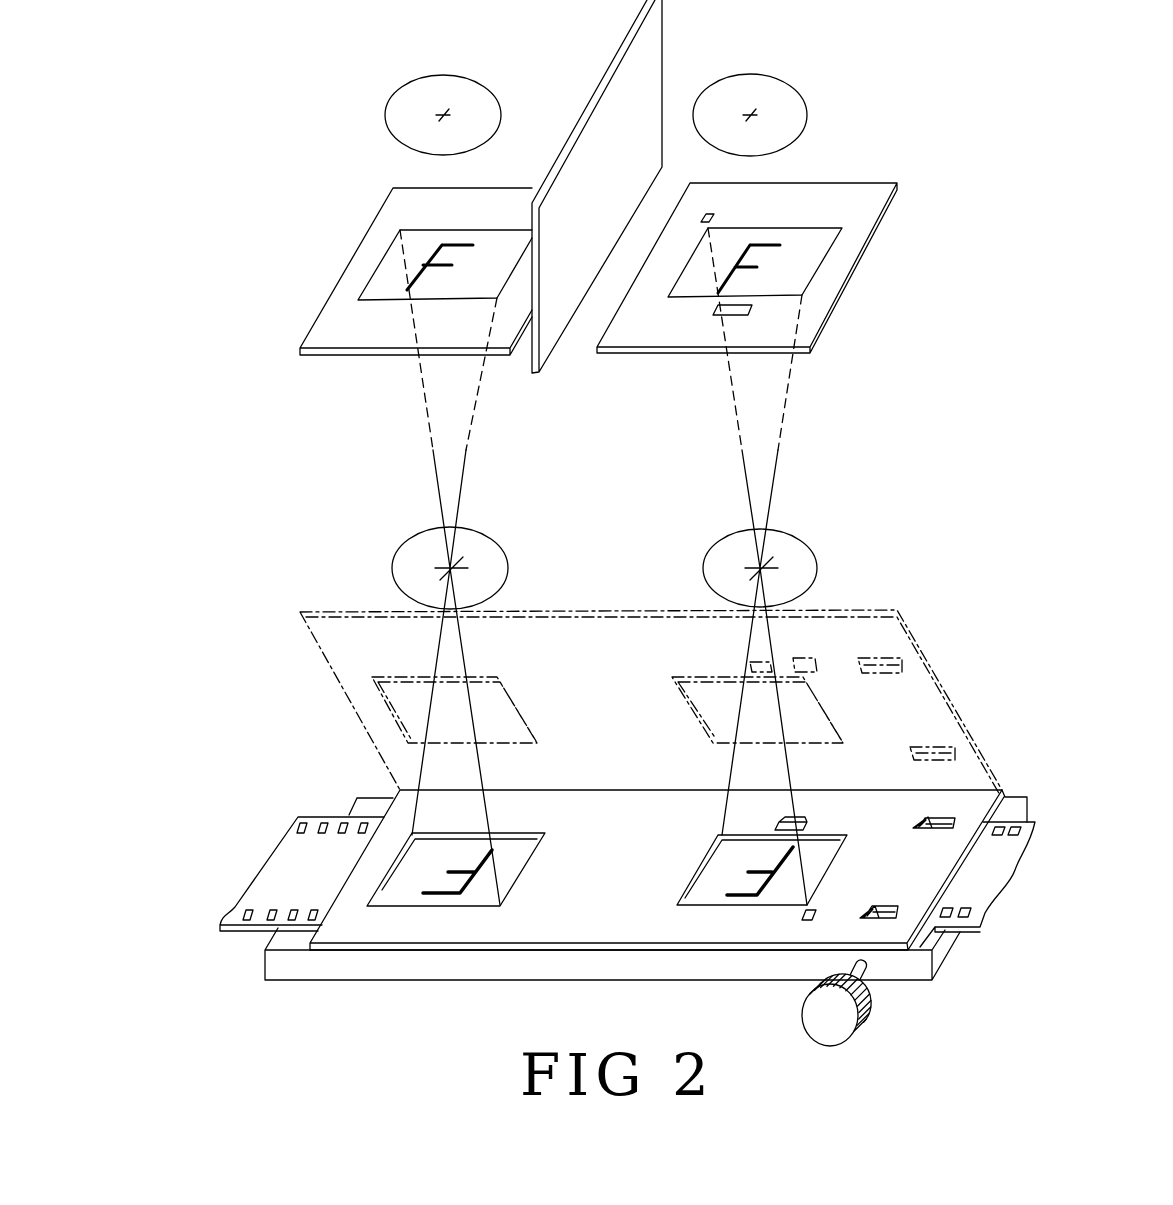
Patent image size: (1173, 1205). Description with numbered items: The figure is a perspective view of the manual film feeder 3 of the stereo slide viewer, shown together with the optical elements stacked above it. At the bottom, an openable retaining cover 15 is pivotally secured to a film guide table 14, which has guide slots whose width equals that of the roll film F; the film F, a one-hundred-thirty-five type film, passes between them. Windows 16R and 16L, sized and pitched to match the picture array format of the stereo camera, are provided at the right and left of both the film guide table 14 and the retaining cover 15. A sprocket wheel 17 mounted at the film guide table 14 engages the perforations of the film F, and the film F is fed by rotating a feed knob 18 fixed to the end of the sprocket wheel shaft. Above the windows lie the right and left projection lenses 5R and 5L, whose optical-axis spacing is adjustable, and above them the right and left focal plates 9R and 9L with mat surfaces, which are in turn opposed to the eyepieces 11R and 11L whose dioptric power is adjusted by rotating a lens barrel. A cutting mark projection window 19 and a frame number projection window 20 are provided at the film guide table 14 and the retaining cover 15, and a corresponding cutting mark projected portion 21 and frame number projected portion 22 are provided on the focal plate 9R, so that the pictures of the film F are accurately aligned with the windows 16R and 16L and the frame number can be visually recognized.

The film feeder 3 is at (871, 596).
The projection lens 5L is at (487, 533).
The projection lens 5R is at (790, 535).
The focal plate 9L is at (380, 283).
The focal plate 9R is at (803, 267).
The eyepiece 11L is at (428, 88).
The eyepiece 11R is at (788, 102).
The film guide table 14 is at (295, 967).
The retaining cover 15 is at (338, 610).
The window 16L is at (378, 893).
The window 16R is at (690, 898).
The sprocket wheel 17 is at (933, 817).
The feed knob 18 is at (823, 1015).
The cutting mark projection window 19 is at (803, 920).
The frame number projection window 20 is at (800, 822).
The cutting mark projected portion 21 is at (712, 214).
The frame number projected portion 22 is at (713, 308).
The roll film F is at (287, 867).